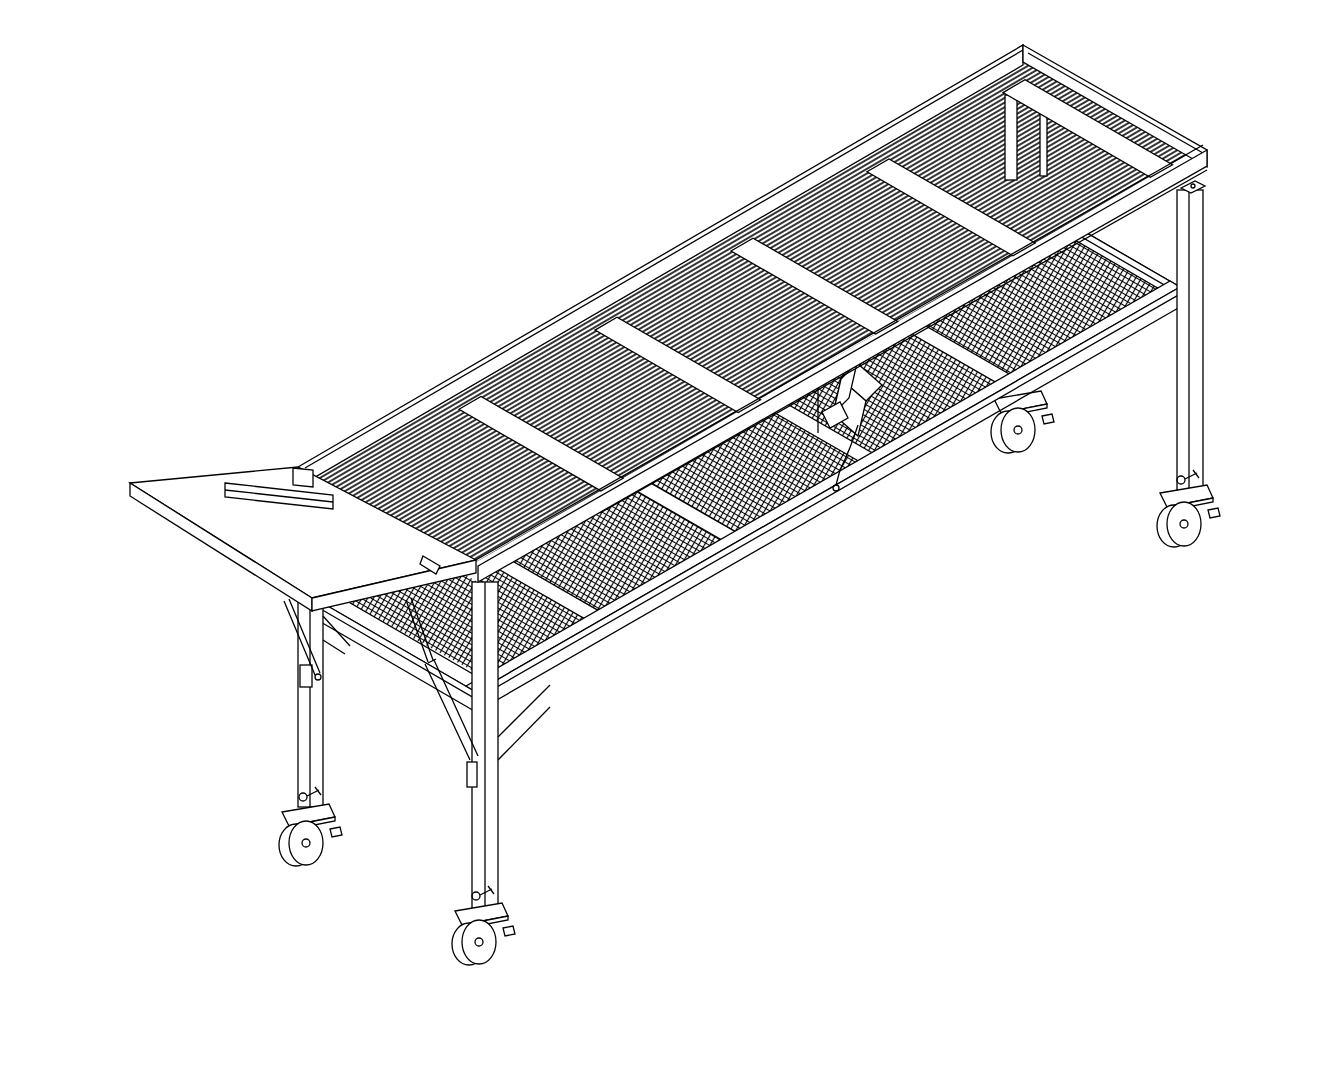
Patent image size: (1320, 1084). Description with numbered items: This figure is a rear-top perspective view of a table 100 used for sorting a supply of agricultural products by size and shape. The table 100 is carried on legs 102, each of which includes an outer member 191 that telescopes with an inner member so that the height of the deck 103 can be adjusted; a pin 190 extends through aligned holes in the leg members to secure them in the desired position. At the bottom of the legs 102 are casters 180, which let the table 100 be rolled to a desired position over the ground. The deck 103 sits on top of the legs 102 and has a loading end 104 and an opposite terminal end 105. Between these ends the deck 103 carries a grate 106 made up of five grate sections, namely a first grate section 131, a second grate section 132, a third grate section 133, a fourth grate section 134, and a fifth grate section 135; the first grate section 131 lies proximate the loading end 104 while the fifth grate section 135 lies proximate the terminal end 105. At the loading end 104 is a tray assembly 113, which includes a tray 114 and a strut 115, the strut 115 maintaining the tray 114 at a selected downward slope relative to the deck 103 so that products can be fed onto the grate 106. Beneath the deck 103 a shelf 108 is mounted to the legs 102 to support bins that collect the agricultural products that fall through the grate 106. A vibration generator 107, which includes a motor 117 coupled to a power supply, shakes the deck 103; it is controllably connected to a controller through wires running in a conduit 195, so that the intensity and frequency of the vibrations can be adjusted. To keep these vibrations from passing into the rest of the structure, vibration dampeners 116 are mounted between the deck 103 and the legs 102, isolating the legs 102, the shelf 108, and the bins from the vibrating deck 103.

The table 100 is at (577, 163).
The legs 102 is at (1210, 220).
The deck 103 is at (1113, 84).
The loading end 104 is at (370, 541).
The terminal end 105 is at (1143, 108).
The grate 106 is at (1142, 152).
The vibration generator 107 is at (862, 412).
The shelf 108 is at (747, 521).
The tray assembly 113 is at (208, 583).
The tray 114 is at (202, 503).
The strut 115 is at (424, 667).
The vibration dampeners 116 is at (1178, 190).
The motor 117 is at (932, 422).
The first grate section 131 is at (406, 447).
The second grate section 132 is at (544, 363).
The third grate section 133 is at (684, 268).
The fourth grate section 134 is at (822, 205).
The fifth grate section 135 is at (966, 127).
The casters 180 is at (1196, 531).
The pin 190 is at (1204, 490).
The outer member 191 is at (1205, 387).
The conduit 195 is at (836, 492).